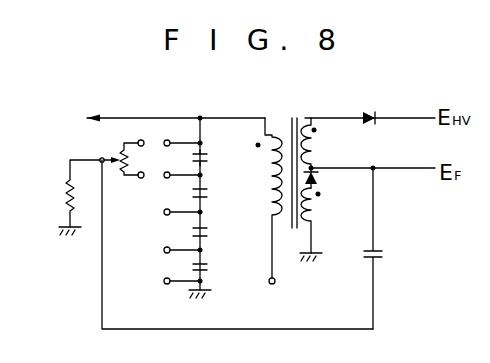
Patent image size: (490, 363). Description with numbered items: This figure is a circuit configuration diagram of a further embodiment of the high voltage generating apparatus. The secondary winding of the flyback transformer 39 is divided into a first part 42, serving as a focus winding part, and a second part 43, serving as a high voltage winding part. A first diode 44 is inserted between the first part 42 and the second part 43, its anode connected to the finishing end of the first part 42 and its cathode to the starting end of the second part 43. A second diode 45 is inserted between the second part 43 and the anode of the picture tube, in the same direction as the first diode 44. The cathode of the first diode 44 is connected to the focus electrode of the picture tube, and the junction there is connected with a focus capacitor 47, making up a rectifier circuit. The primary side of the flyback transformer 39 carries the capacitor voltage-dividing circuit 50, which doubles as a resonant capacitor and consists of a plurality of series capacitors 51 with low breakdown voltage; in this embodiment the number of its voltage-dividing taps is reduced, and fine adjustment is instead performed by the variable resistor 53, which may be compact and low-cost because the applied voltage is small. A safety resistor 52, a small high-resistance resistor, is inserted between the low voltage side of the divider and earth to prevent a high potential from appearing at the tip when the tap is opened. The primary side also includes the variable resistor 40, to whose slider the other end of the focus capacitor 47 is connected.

The flyback transformer 39 is at (308, 108).
The variable resistor 40 is at (258, 201).
The first part of the secondary winding 42 is at (318, 206).
The second part of the secondary winding 43 is at (318, 140).
The first diode 44 is at (318, 177).
The second diode 45 is at (375, 106).
The focus capacitor 47 is at (384, 255).
The capacitor voltage-dividing circuit 50 is at (144, 244).
The capacitors 51 is at (207, 267).
The safety resistor 52 is at (66, 194).
The variable resistor 53 is at (115, 156).